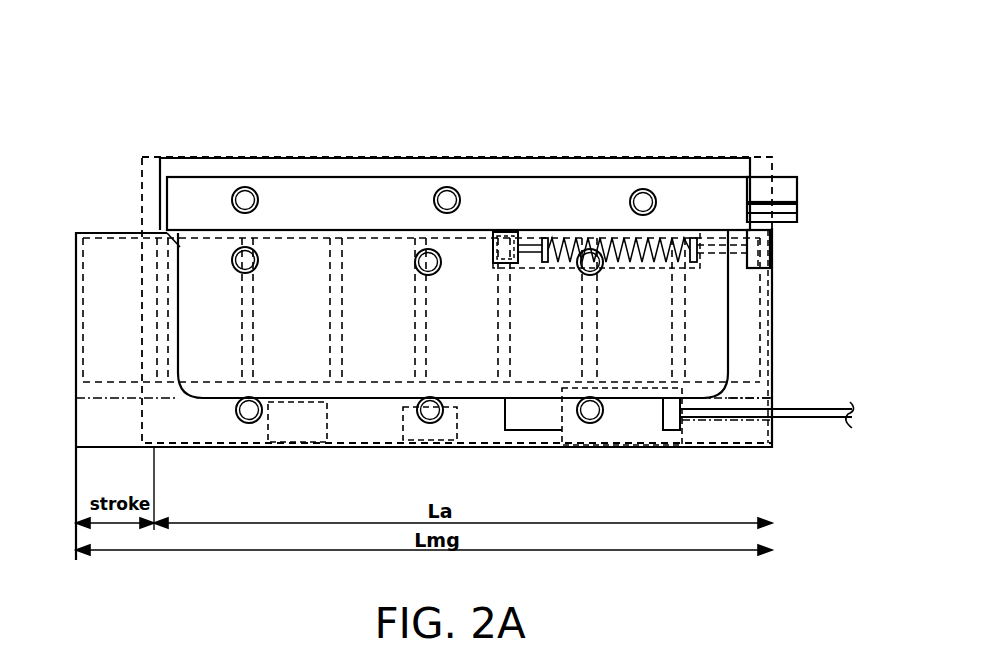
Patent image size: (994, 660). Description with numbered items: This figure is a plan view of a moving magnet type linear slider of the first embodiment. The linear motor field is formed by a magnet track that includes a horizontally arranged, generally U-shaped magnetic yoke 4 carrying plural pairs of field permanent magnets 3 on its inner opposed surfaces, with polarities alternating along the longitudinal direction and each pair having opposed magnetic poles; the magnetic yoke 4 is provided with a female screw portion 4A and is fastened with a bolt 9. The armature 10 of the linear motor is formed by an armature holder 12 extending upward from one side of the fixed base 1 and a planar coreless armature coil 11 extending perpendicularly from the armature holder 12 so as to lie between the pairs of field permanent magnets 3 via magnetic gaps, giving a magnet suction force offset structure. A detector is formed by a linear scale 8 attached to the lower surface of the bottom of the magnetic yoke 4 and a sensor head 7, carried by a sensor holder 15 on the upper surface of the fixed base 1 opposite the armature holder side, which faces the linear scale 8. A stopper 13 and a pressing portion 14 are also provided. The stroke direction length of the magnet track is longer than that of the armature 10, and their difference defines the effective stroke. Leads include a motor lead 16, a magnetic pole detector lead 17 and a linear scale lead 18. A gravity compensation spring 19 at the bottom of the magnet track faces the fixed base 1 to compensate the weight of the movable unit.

The fixed base 1 is at (347, 168).
The field permanent magnet 3 is at (76, 263).
The magnetic yoke 4 is at (76, 343).
The female screw portion 4A is at (250, 258).
The sensor head 7 is at (590, 415).
The linear scale 8 is at (505, 420).
The bolt 9 is at (250, 200).
The armature 10 is at (215, 53).
The armature coil 11 is at (165, 232).
The armature holder 12 is at (185, 192).
The stopper 13 is at (430, 425).
The pressing portion 14 is at (268, 428).
The sensor holder 15 is at (562, 420).
The motor lead 16 is at (762, 195).
The magnetic pole detector lead 17 is at (800, 212).
The linear scale lead 18 is at (812, 412).
The gravity compensation spring 19 is at (557, 235).